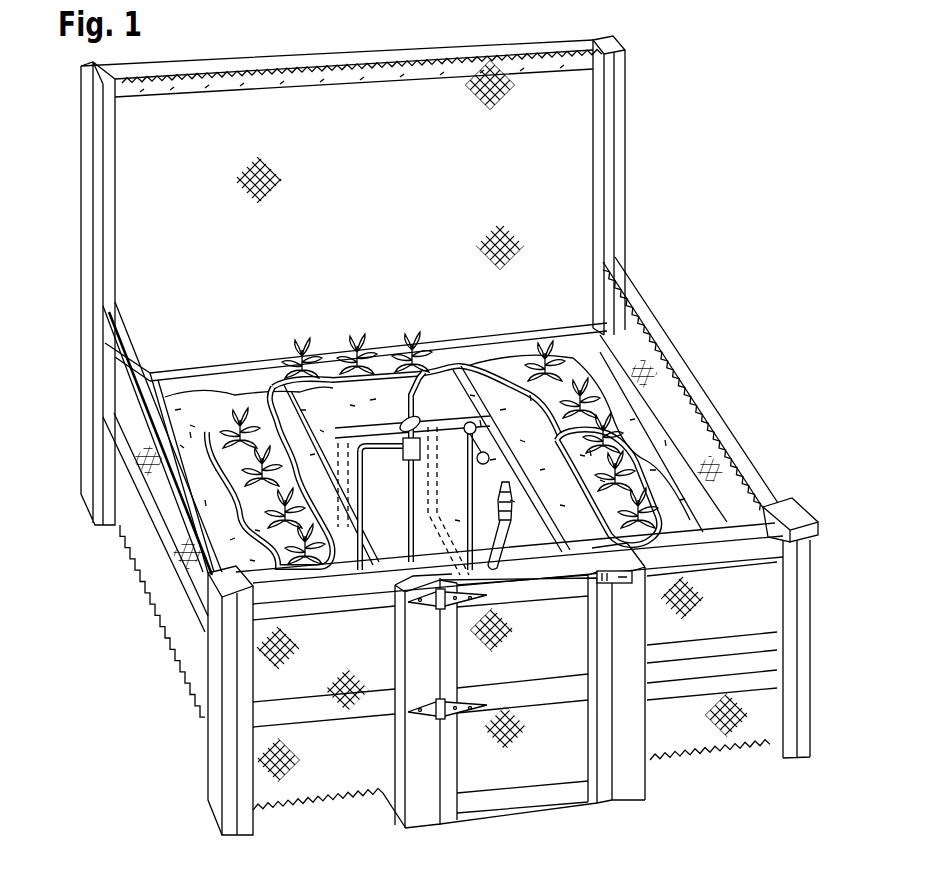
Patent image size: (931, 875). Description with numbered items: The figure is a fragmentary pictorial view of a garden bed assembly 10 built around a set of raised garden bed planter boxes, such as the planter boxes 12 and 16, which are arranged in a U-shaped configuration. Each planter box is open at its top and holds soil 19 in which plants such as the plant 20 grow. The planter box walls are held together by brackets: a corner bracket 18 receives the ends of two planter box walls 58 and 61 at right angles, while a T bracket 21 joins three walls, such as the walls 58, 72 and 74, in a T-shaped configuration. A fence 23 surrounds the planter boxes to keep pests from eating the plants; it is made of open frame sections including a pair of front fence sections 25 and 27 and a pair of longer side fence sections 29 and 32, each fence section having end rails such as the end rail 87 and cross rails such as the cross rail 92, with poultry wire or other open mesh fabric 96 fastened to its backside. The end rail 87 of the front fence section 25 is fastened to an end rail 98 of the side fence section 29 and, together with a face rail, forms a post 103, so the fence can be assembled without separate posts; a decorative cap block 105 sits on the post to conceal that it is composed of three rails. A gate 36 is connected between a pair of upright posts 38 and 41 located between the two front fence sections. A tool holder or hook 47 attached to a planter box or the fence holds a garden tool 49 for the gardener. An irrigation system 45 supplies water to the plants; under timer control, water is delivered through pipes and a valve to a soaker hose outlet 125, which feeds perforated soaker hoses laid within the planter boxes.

The garden bed assembly 10 is at (320, 813).
The raised garden bed planter box 12 is at (198, 390).
The raised garden bed planter box 16 is at (487, 333).
The corner bracket 18 is at (532, 333).
The soil 19 is at (172, 398).
The plant 20 is at (231, 398).
The T bracket 21 is at (418, 378).
The fence 23 is at (718, 386).
The front fence section 25 is at (347, 803).
The front fence section 27 is at (733, 757).
The side fence section 29 is at (190, 694).
The side fence section 32 is at (754, 452).
The gate 36 is at (532, 818).
The upright post 38 is at (425, 820).
The upright post 41 is at (634, 797).
The irrigation system 45 is at (452, 470).
The tool holder 47 is at (506, 484).
The garden tool 49 is at (597, 583).
The planter box wall 58 is at (533, 350).
The planter box wall 61 is at (600, 397).
The planter box wall 72 is at (390, 347).
The planter box wall 74 is at (452, 348).
The end rail 87 is at (248, 833).
The cross rail 92 is at (338, 600).
The open mesh fabric 96 is at (277, 697).
The end rail 98 is at (238, 574).
The post 103 is at (207, 806).
The cap block 105 is at (800, 518).
The soaker hose outlet 125 is at (331, 383).